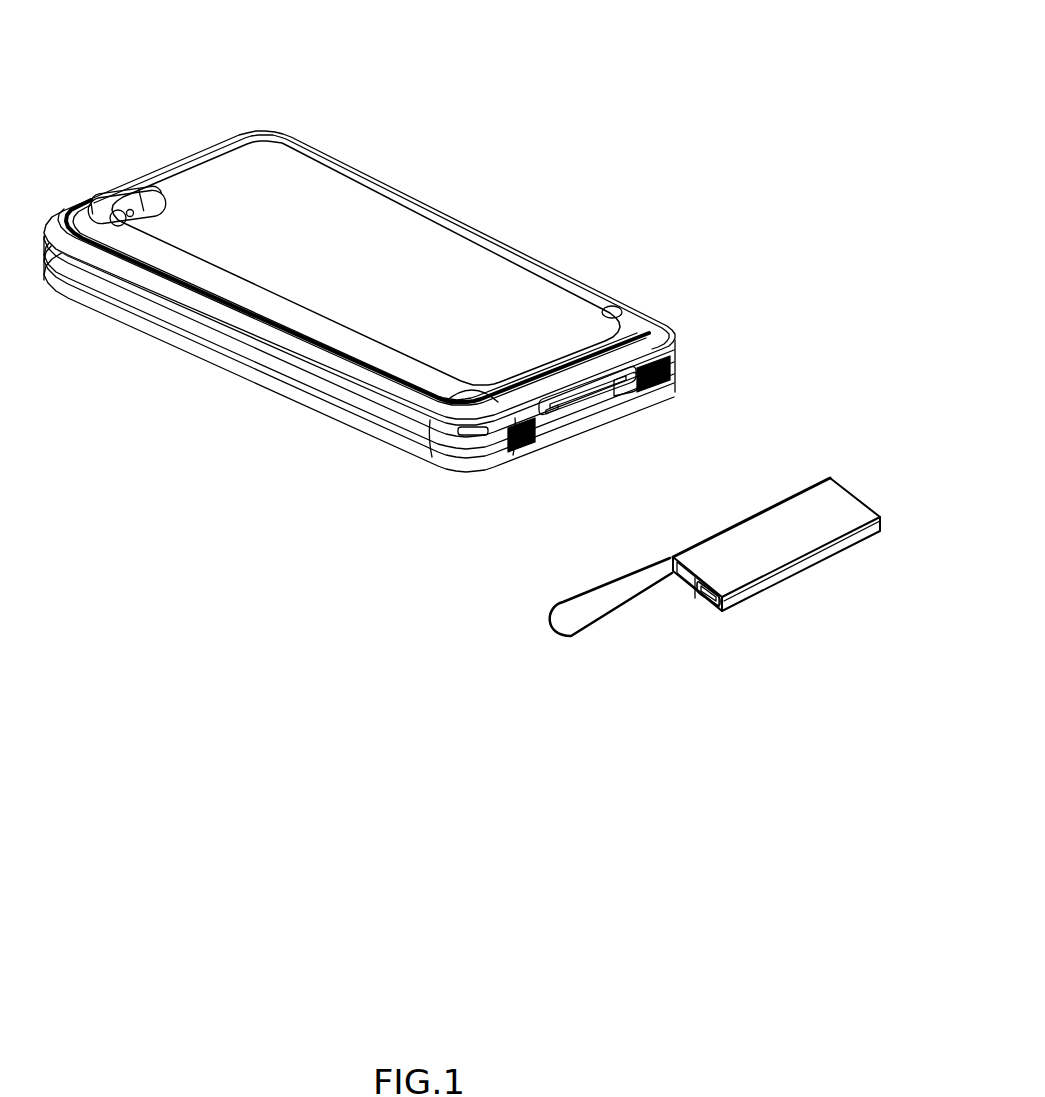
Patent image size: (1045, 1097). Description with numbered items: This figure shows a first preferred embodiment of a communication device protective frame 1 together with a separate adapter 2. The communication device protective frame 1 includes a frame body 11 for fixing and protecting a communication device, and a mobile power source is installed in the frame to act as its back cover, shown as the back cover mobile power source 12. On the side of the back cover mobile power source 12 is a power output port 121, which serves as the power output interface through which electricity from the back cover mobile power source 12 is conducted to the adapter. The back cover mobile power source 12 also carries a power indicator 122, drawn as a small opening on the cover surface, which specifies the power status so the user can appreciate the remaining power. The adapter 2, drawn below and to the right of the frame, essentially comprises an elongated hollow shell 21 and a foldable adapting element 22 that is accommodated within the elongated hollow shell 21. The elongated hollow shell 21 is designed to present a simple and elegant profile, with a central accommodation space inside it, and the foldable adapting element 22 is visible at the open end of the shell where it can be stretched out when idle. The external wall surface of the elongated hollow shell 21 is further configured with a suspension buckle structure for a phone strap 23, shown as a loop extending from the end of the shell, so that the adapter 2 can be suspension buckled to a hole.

The communication device protective frame 1 is at (648, 92).
The frame body 11 is at (366, 162).
The back cover mobile power source 12 is at (467, 268).
The power output port 121 is at (600, 410).
The power indicator 122 is at (614, 308).
The adapter 2 is at (648, 718).
The elongated hollow shell 21 is at (830, 505).
The foldable adapting element 22 is at (718, 606).
The phone strap 23 is at (573, 633).